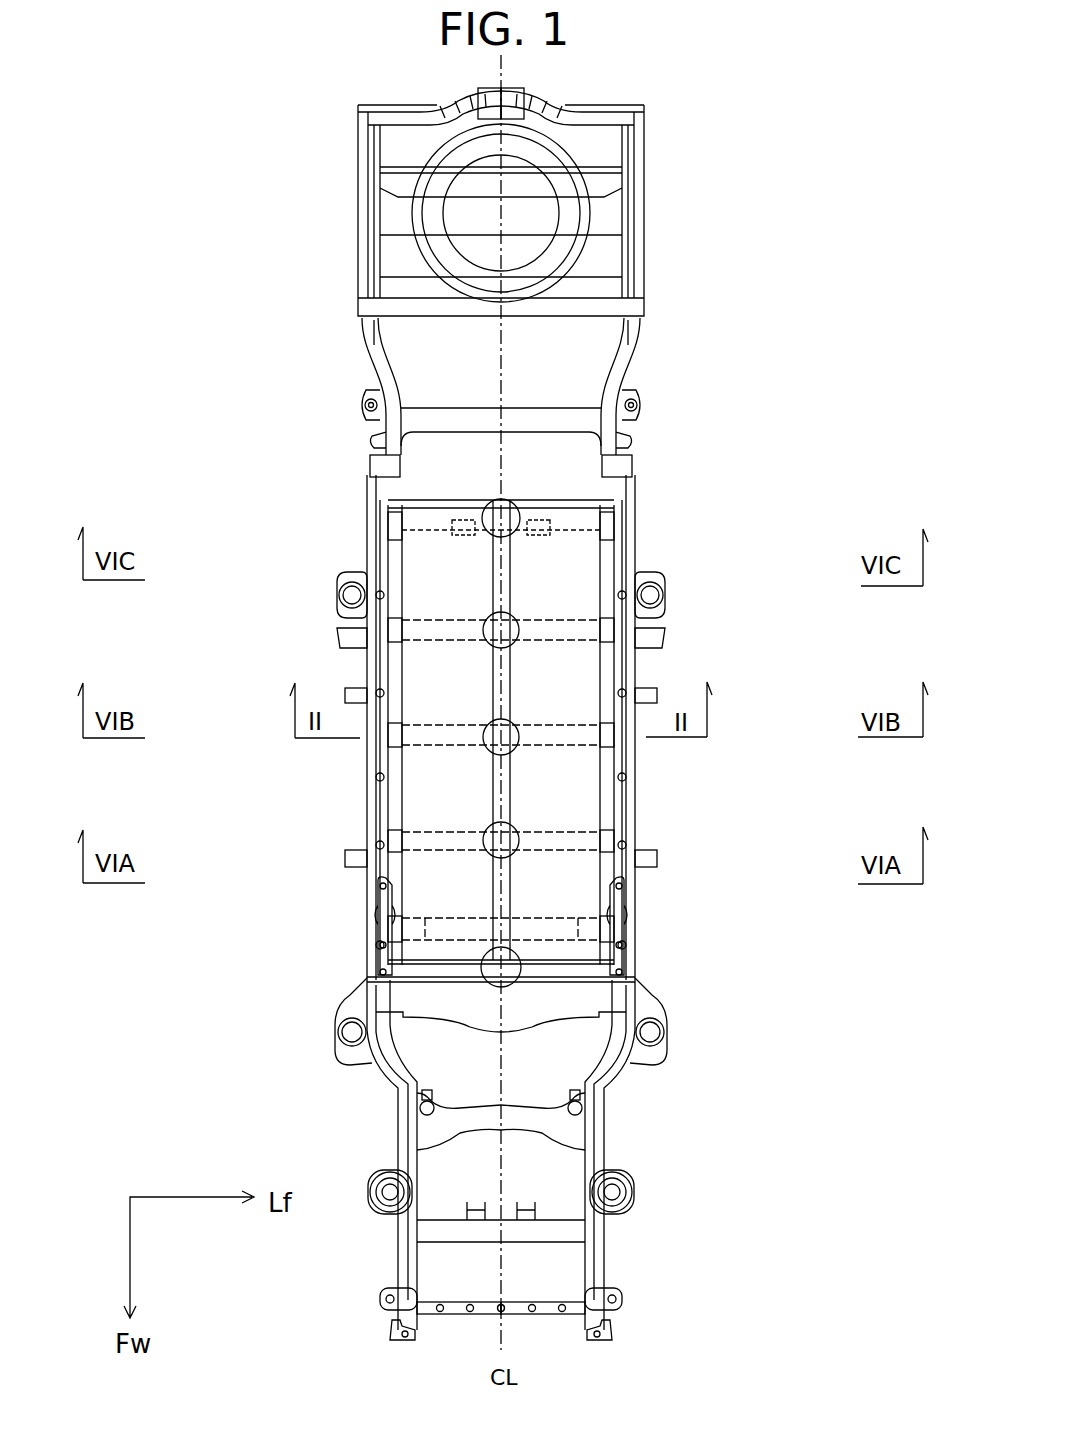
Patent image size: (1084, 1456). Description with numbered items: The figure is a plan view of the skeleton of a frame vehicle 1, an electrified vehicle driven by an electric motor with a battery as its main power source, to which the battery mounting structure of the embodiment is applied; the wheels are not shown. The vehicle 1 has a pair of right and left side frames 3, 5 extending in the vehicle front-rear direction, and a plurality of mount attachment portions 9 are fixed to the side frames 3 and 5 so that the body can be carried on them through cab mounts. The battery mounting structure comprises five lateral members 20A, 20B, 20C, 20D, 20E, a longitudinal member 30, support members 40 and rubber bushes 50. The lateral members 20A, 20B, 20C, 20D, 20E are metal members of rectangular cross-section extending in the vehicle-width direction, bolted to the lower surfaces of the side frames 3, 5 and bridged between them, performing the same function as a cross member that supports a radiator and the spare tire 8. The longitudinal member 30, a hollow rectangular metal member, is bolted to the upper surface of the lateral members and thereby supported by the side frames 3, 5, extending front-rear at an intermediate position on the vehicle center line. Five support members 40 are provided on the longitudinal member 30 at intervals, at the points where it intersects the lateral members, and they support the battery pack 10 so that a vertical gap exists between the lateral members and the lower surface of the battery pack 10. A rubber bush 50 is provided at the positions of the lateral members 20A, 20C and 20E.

The vehicle 1 is at (280, 453).
The side frame 3 is at (628, 808).
The side frame 5 is at (367, 800).
The spare tire 8 is at (600, 215).
The mount attachment portion 9 is at (666, 597).
The battery pack 10 is at (560, 878).
The lateral member 20A is at (545, 985).
The lateral member 20B is at (560, 848).
The lateral member 20C is at (548, 725).
The lateral member 20D is at (450, 615).
The lateral member 20E is at (548, 495).
The longitudinal member 30 is at (493, 887).
The support member 40 is at (483, 740).
The rubber bush 50 is at (615, 525).